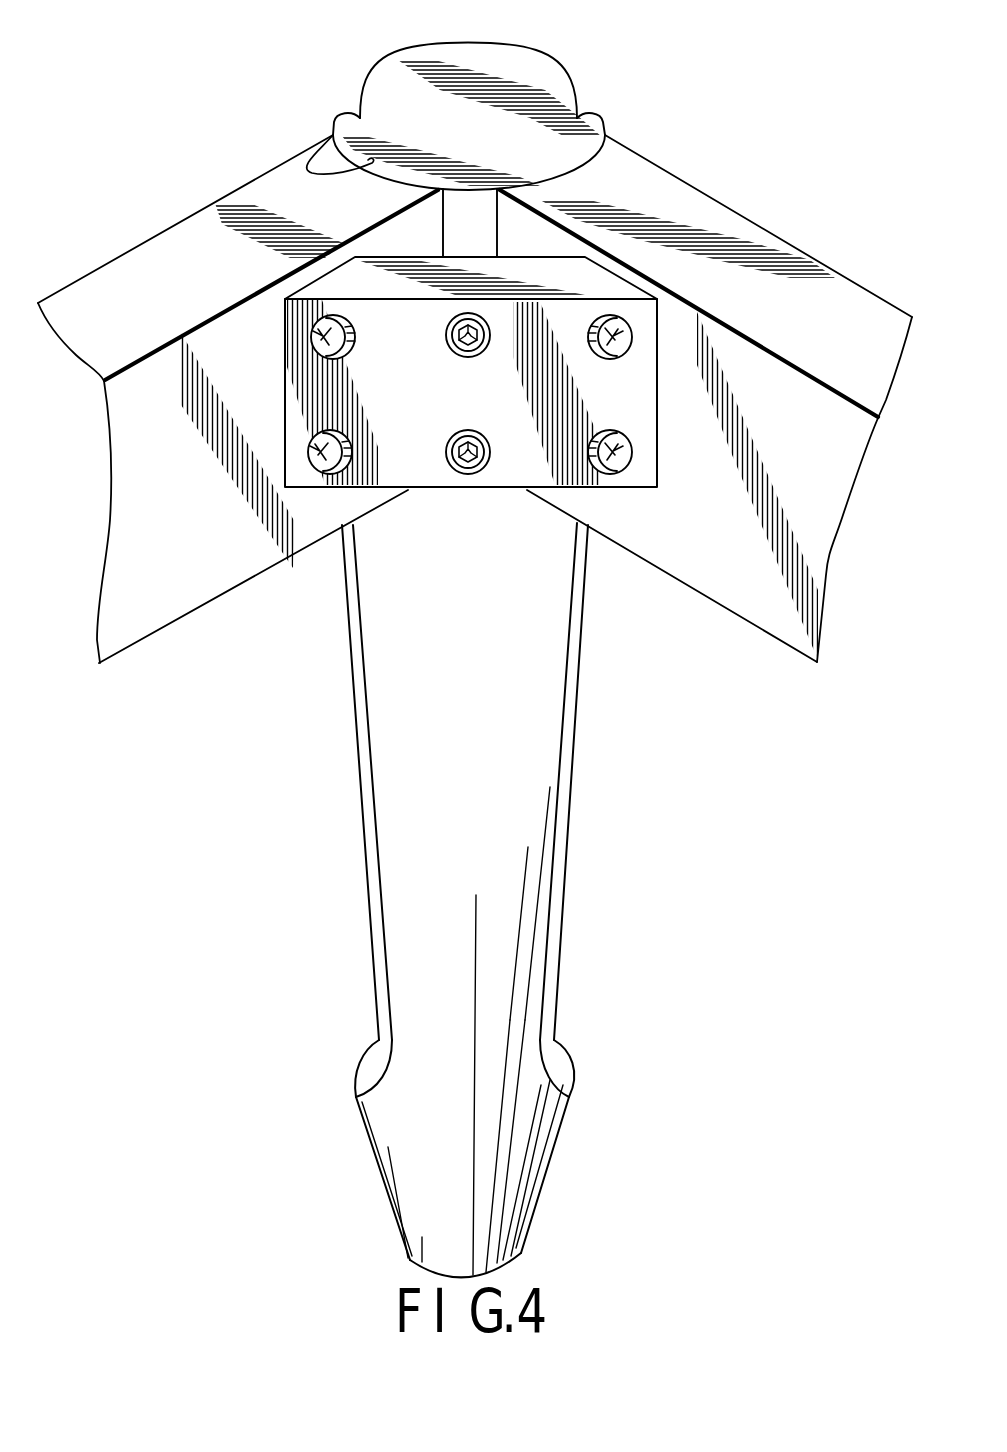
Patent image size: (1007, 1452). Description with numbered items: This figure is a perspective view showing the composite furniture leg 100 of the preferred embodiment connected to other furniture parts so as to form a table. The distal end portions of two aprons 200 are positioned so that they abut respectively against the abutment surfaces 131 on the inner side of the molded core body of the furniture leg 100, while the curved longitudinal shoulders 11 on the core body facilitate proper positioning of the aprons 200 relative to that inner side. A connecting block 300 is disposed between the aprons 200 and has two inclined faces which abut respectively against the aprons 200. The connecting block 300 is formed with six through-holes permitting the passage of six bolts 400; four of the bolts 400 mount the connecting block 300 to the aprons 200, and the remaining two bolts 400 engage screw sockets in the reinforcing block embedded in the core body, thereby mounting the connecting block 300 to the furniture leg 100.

The composite furniture leg 100 is at (645, 81).
The curved longitudinal shoulders 11 is at (333, 133).
The abutment surfaces 131 is at (368, 161).
The aprons 200 is at (162, 244).
The connecting block 300 is at (402, 474).
The bolts 400 is at (466, 482).